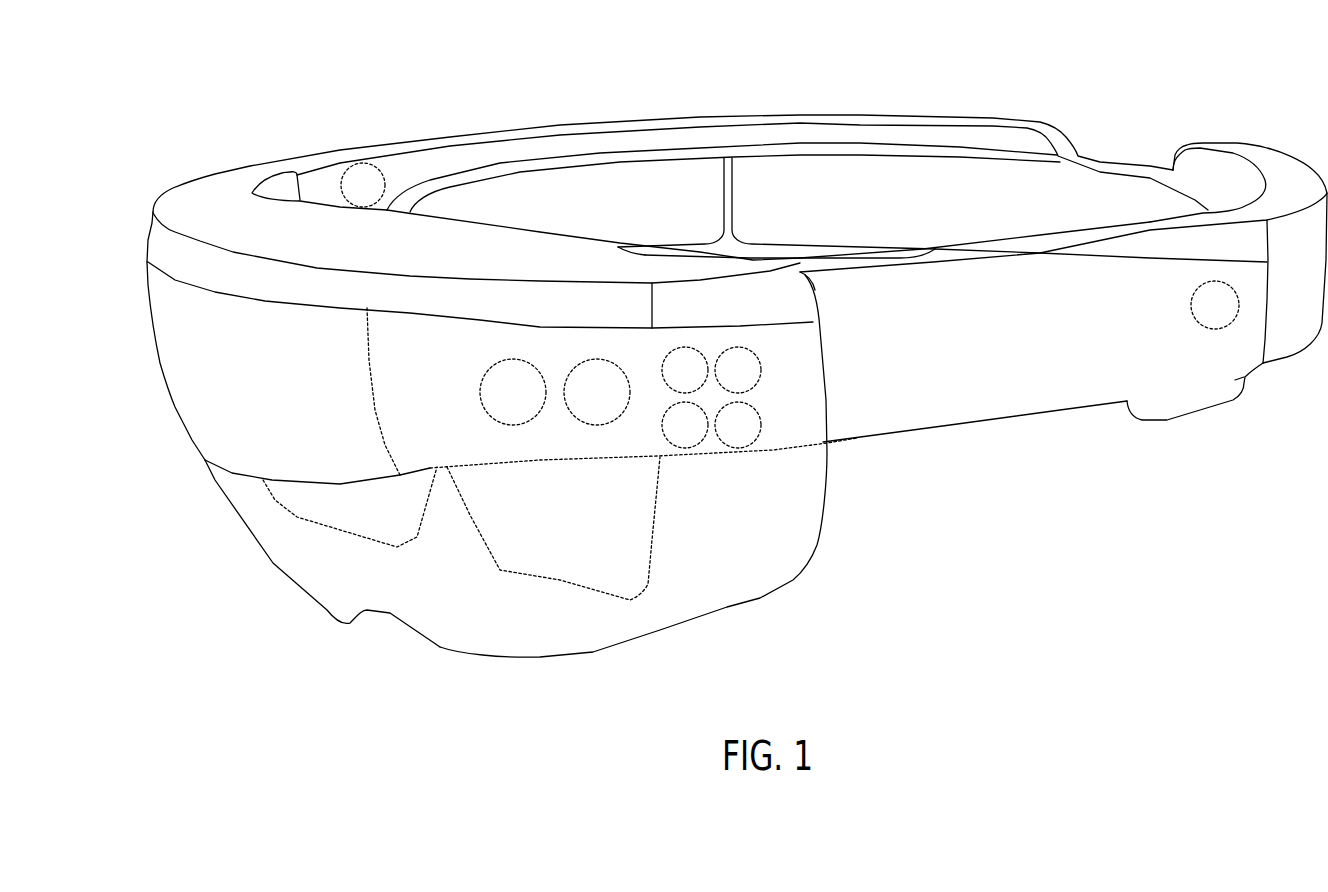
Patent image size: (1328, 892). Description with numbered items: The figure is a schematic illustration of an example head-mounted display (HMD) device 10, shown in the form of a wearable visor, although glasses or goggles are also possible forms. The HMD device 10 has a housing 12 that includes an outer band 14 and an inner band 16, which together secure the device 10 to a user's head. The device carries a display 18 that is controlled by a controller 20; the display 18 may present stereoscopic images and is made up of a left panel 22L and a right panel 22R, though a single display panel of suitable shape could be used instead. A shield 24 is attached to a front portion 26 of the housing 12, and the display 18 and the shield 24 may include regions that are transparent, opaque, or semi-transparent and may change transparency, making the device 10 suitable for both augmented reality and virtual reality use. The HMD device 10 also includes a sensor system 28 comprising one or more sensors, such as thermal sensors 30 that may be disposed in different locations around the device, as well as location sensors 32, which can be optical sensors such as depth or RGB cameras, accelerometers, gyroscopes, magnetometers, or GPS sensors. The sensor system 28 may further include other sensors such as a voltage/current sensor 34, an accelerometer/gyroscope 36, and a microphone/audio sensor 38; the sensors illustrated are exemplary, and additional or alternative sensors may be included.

The head-mounted display device 10 is at (698, 329).
The housing 12 is at (737, 252).
The outer band 14 is at (881, 413).
The inner band 16 is at (787, 225).
The display 18 is at (432, 552).
The controller 20 is at (350, 249).
The right panel 22R is at (372, 532).
The left panel 22L is at (605, 577).
The shield 24 is at (760, 598).
The front portion 26 is at (111, 219).
The sensor system 28 is at (612, 394).
The thermal sensor 30 is at (353, 197).
The location sensor 32 is at (550, 446).
The voltage/current sensor 34 is at (675, 437).
The accelerometer/gyroscope 36 is at (728, 437).
The microphone/audio sensor 38 is at (728, 382).